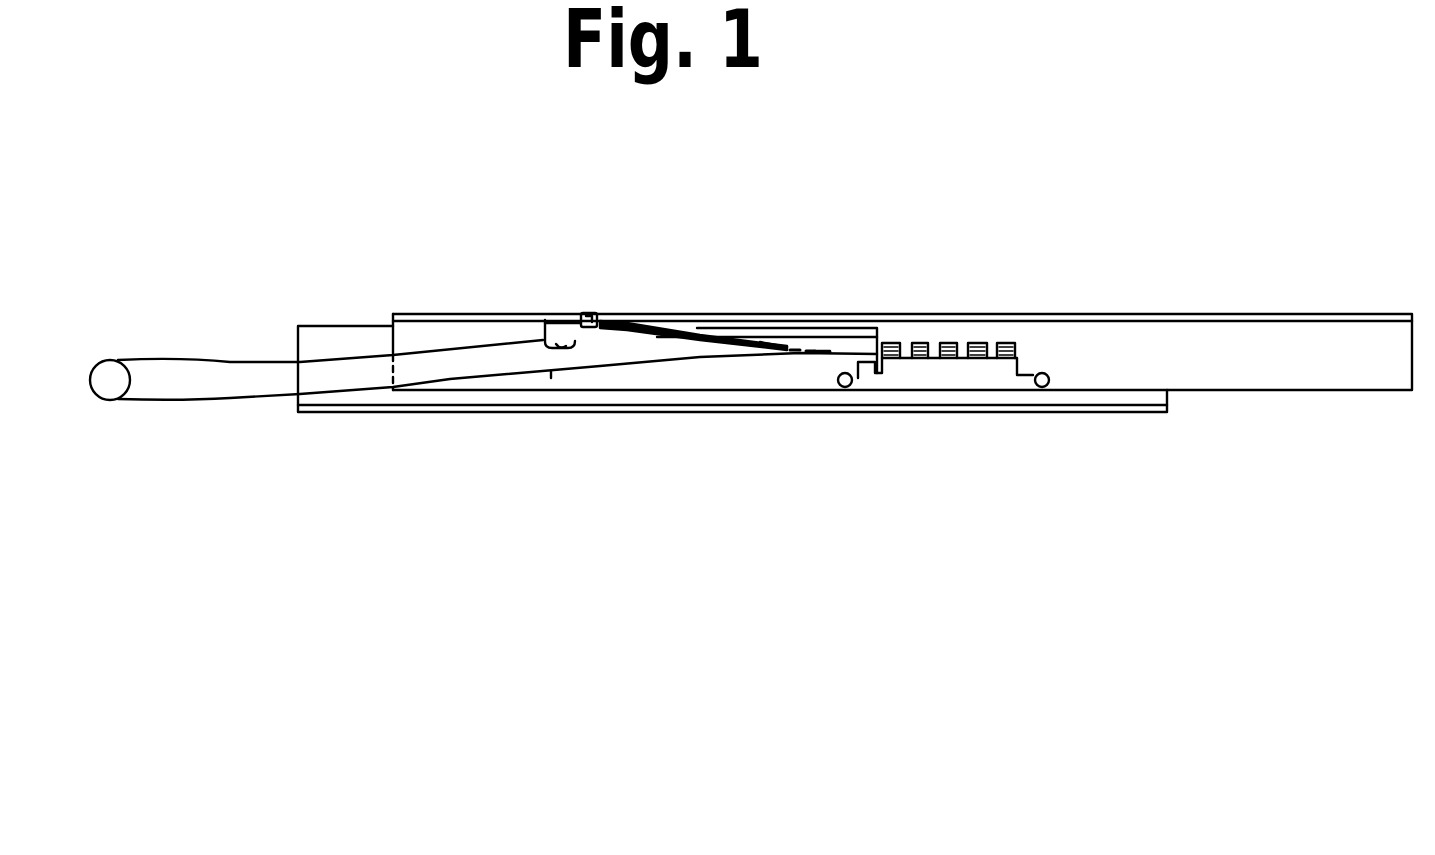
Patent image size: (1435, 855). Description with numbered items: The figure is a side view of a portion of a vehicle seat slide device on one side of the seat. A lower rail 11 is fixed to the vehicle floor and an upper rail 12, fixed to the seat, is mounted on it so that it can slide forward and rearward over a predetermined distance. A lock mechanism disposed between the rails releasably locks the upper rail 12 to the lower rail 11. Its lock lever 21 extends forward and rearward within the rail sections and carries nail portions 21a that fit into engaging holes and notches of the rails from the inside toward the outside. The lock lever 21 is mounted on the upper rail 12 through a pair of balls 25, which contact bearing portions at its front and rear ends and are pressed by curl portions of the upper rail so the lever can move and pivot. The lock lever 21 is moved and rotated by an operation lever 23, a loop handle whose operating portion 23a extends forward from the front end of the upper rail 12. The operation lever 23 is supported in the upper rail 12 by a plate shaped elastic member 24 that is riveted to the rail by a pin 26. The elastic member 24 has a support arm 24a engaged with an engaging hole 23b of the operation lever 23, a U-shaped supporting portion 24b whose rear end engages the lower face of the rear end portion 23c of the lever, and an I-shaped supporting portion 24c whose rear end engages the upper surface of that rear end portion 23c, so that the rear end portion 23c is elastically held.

The lower rail 11 is at (390, 413).
The upper rail 12 is at (435, 313).
The lock lever 21 is at (967, 367).
The nail portions 21a is at (987, 343).
The operation lever 23 is at (238, 385).
The operating portion 23a is at (110, 397).
The engaging hole 23b is at (543, 338).
The rear end portion 23c is at (866, 330).
The plate shaped elastic member 24 is at (627, 322).
The support arm 24a is at (562, 348).
The U-shaped supporting portion 24b is at (823, 353).
The I-shaped supporting portion 24c is at (788, 337).
The balls 25 is at (847, 387).
The pin 26 is at (590, 312).